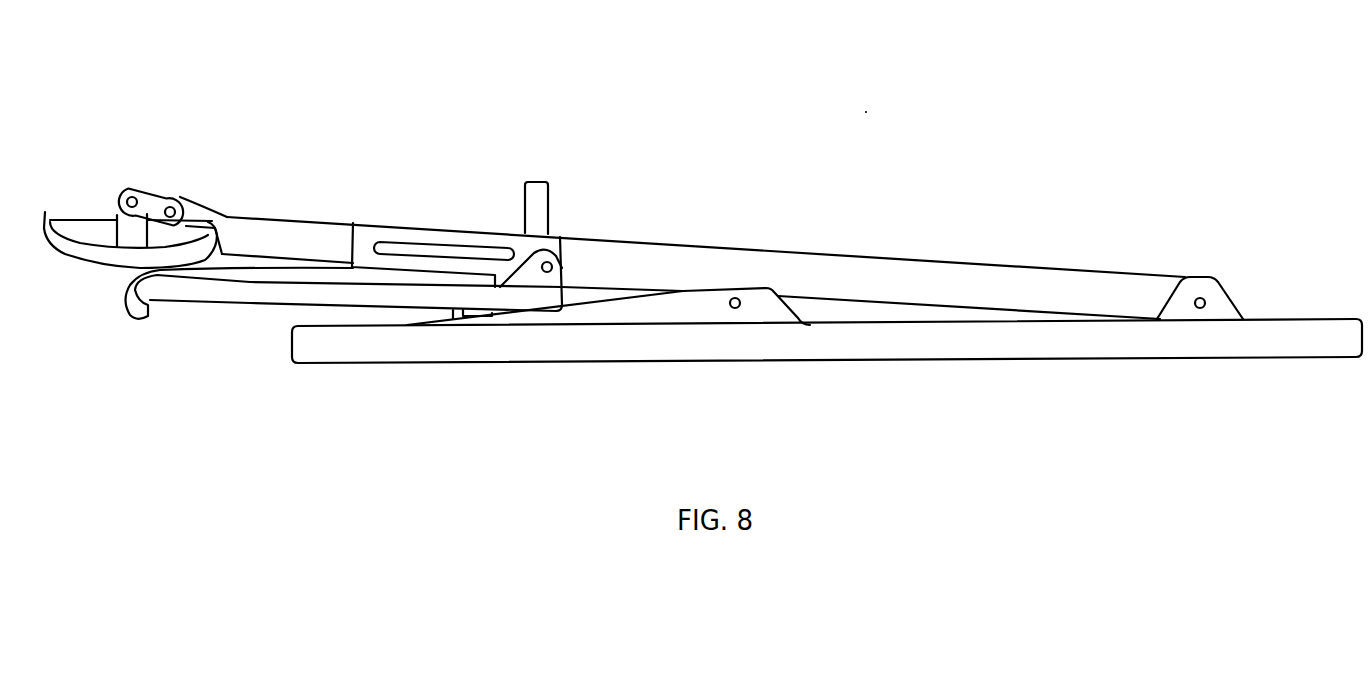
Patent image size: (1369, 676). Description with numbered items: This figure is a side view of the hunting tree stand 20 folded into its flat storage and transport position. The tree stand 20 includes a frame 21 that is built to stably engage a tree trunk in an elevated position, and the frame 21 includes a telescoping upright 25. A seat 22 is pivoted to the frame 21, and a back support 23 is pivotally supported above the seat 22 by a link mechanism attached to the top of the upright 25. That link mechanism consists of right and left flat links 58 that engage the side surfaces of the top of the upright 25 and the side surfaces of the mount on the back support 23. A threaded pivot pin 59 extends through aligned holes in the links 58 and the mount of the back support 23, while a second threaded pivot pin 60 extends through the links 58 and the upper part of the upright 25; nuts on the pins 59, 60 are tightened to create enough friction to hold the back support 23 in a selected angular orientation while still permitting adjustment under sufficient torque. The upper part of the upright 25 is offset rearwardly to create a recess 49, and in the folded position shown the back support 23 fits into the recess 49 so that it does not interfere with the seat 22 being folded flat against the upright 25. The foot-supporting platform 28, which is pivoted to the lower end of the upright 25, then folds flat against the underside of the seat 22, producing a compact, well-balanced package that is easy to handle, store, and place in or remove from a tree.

The tree stand 20 is at (862, 120).
The frame 21 is at (1037, 268).
The seat 22 is at (235, 305).
The back support 23 is at (54, 270).
The telescoping upright 25 is at (404, 228).
The foot-supporting platform 28 is at (748, 361).
The recess 49 is at (198, 209).
The flat links 58 is at (147, 188).
The threaded pivot pin 59 is at (175, 206).
The threaded pivot pin 60 is at (132, 196).